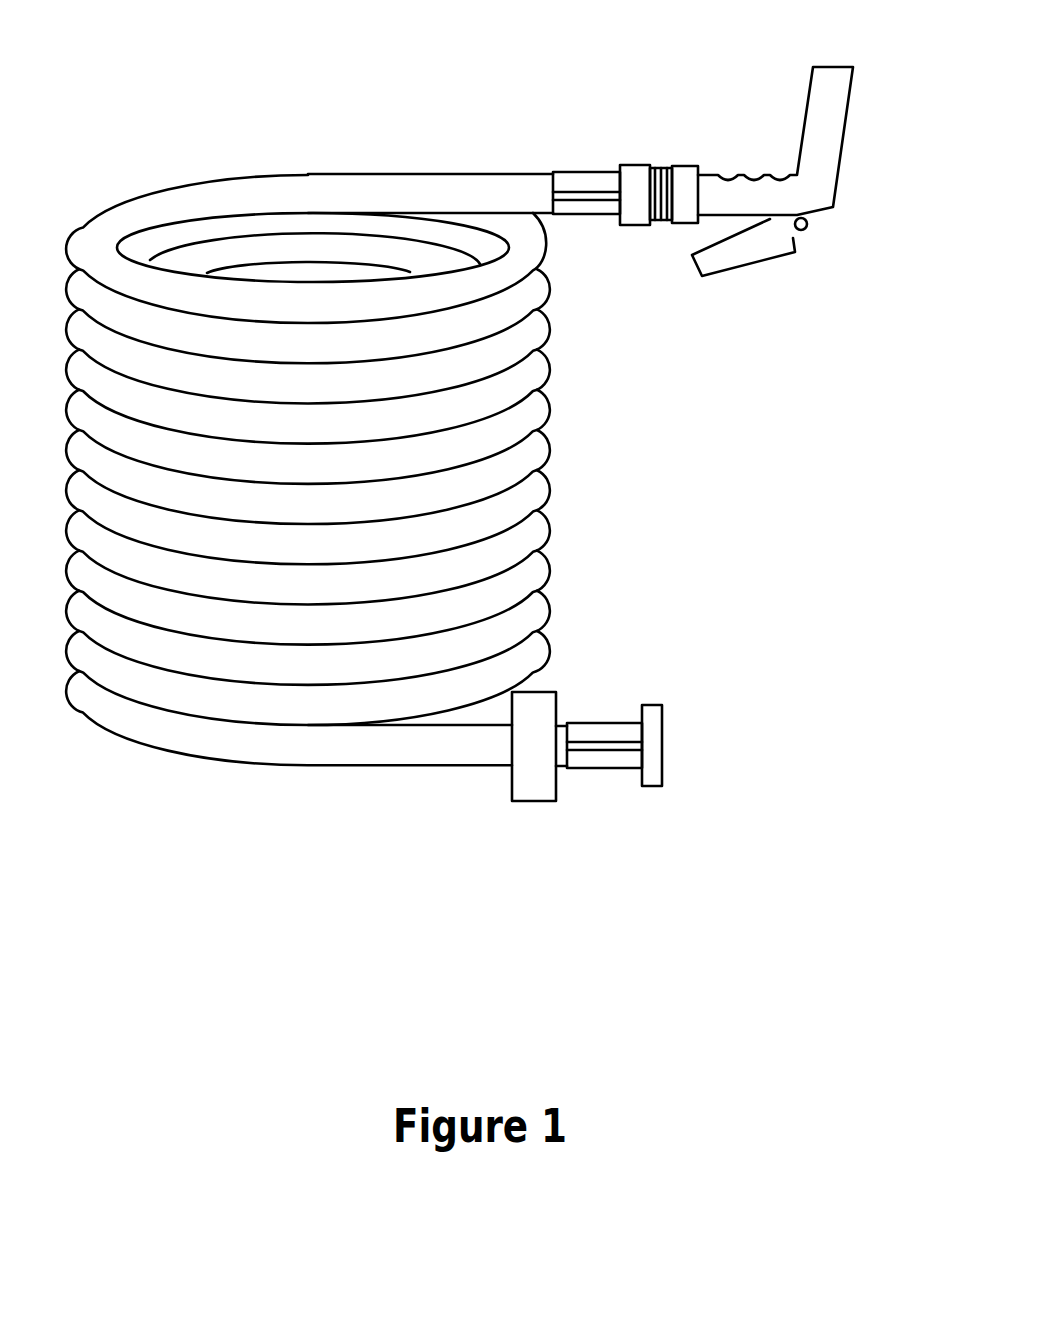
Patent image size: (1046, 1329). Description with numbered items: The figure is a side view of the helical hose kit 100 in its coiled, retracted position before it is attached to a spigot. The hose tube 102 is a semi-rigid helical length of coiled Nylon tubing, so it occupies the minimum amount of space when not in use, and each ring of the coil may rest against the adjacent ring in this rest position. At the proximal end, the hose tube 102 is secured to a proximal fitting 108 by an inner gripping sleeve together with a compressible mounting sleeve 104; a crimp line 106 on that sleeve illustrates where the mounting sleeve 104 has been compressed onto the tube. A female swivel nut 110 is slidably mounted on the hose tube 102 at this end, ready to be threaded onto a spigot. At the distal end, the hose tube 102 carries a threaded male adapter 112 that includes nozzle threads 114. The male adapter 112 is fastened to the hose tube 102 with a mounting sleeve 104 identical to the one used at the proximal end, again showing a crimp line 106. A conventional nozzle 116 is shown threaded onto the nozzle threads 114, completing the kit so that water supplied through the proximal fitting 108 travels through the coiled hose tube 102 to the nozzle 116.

The helical hose kit 100 is at (278, 117).
The hose tube 102 is at (228, 193).
The mounting sleeve 104 is at (587, 175).
The crimp line 106 is at (565, 195).
The proximal fitting 108 is at (653, 757).
The female swivel nut 110 is at (542, 765).
The threaded male adapter 112 is at (638, 177).
The nozzle threads 114 is at (660, 170).
The nozzle 116 is at (828, 167).